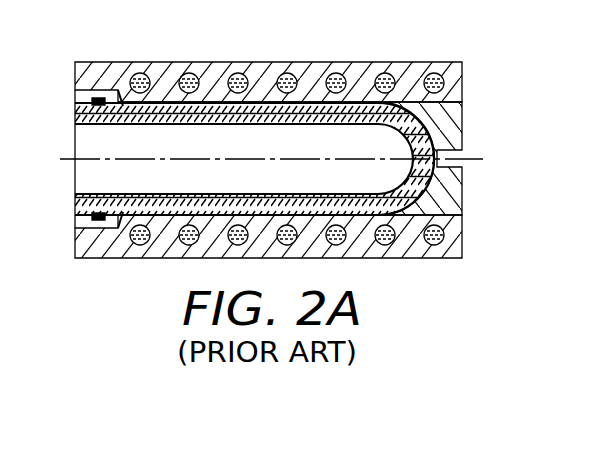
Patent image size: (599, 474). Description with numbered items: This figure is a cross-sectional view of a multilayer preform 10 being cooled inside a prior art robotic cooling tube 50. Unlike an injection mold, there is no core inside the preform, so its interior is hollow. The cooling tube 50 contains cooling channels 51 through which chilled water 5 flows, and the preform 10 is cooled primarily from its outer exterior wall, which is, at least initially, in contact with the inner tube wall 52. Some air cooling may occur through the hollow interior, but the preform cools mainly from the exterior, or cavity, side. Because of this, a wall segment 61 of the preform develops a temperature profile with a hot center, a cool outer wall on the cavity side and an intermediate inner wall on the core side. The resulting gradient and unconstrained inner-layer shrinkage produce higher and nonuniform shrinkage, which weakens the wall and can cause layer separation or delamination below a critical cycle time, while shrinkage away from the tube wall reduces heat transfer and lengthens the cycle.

The robotic cooling tube 50 is at (287, 57).
The multilayer preform 10 is at (436, 193).
The inner tube wall 52 is at (217, 100).
The wall segment 61 is at (270, 224).
The chilled water 5 is at (140, 73).
The cooling channels 51 is at (385, 72).